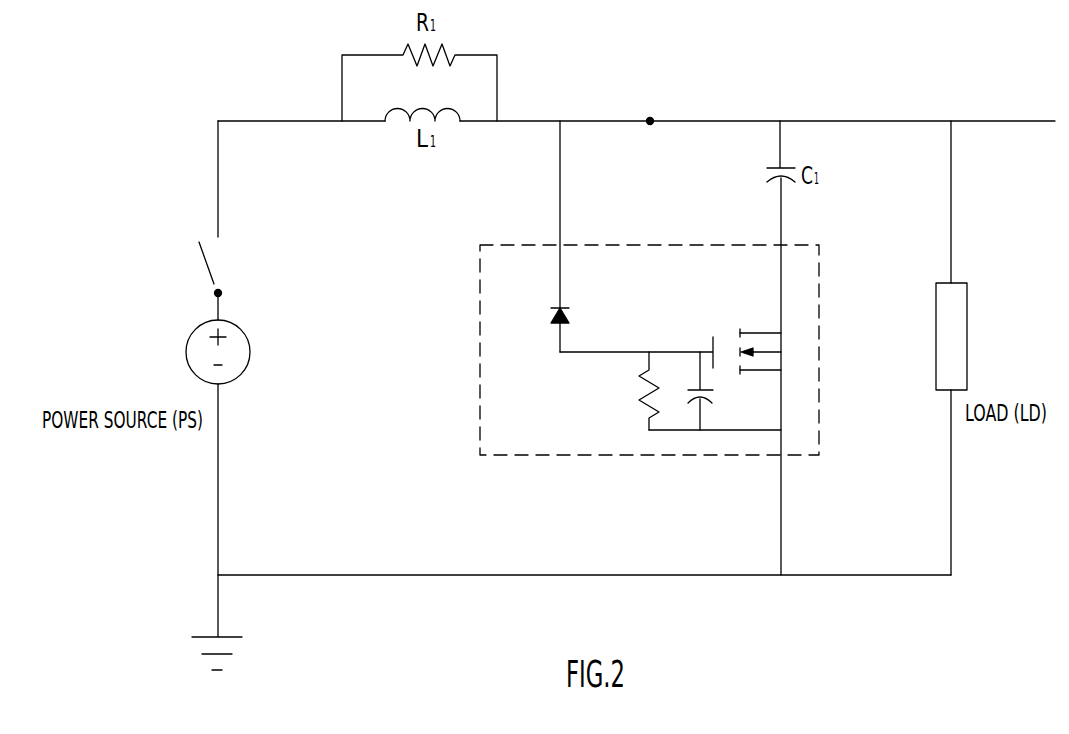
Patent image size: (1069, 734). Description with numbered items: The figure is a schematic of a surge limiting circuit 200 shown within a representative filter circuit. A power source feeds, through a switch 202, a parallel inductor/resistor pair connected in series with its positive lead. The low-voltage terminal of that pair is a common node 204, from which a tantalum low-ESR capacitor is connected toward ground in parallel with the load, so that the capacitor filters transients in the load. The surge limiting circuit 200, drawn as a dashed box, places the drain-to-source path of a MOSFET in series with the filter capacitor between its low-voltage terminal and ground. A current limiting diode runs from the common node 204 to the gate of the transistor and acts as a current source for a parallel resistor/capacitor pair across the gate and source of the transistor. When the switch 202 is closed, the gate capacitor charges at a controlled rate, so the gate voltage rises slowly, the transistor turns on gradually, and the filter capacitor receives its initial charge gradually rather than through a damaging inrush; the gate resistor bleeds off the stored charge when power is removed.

The surge limiting circuit 200 is at (678, 244).
The switch 202 is at (213, 281).
The common node 204 is at (650, 120).